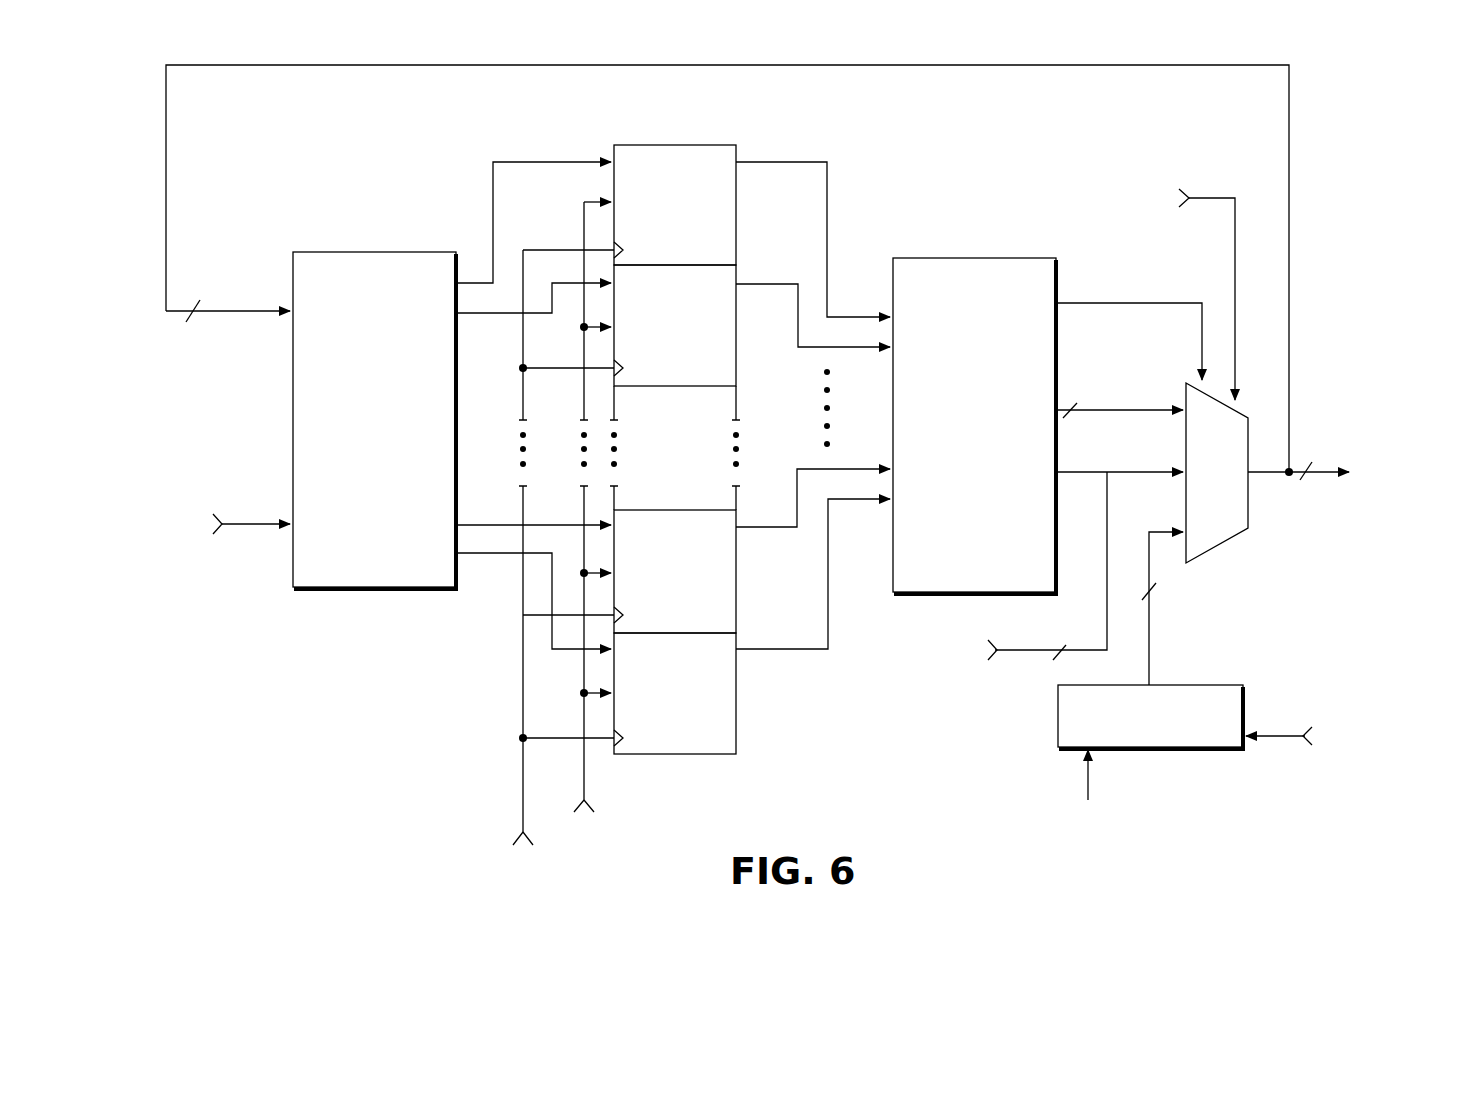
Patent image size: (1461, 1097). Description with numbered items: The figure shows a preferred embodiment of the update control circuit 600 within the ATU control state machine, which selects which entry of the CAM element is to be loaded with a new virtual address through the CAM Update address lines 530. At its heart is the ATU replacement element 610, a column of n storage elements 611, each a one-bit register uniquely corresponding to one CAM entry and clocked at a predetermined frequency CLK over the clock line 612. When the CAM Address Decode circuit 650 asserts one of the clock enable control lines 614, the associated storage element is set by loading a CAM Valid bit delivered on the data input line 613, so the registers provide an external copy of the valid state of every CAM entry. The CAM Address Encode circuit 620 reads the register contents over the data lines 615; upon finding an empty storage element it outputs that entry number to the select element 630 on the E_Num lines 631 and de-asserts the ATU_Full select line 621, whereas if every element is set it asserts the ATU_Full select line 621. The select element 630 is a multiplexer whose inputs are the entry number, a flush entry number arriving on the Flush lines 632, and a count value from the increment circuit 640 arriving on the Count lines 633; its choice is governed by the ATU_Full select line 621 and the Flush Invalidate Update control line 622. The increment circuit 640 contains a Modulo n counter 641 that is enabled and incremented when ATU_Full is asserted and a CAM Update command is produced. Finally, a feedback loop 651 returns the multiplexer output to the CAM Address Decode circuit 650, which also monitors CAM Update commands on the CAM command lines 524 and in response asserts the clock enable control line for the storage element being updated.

The update control circuit 600 is at (905, 803).
The CAM Address Decode circuit 650 is at (370, 595).
The feedback loop 651 is at (167, 150).
The CAM command lines 524 is at (247, 528).
The clock enable control lines 614 is at (537, 158).
The clock line 612 is at (523, 793).
The data input line 613 is at (584, 781).
The ATU replacement element 610 is at (716, 481).
The storage elements 611 is at (740, 200).
The data lines 615 is at (772, 160).
The CAM Address Encode circuit 620 is at (883, 578).
The ATU_Full select line 621 is at (1158, 300).
The Flush Invalidate Update control line 622 is at (1209, 196).
The E_Num lines 631 is at (1155, 405).
The select element 630 is at (1258, 528).
The CAM Update address lines 530 is at (1322, 482).
The Flush lines 632 is at (1126, 470).
The Count lines 633 is at (1150, 566).
The increment circuit 640 is at (1252, 804).
The Modulo n counter 641 is at (1058, 712).